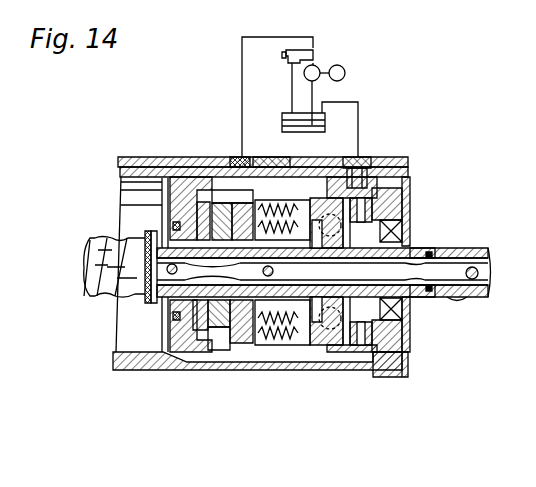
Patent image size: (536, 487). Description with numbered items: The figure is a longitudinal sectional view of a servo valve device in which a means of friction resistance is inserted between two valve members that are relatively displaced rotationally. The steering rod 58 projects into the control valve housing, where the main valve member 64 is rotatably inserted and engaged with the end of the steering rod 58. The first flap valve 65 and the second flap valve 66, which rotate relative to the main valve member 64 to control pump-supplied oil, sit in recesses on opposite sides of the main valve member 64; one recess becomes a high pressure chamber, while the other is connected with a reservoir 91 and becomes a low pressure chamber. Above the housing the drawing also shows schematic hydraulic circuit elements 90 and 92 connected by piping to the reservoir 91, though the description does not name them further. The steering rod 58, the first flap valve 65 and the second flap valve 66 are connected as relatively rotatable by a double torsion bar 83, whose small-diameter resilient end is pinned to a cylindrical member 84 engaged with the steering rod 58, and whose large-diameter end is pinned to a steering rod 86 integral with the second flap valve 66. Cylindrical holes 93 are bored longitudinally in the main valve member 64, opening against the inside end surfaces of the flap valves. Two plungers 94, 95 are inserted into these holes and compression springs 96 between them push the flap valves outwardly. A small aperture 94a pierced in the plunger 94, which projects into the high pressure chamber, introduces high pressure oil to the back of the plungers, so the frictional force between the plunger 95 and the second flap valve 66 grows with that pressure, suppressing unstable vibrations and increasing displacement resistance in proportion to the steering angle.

The steering rod 58 is at (102, 297).
The main valve member 64 is at (330, 167).
The first flap valve 65 is at (230, 342).
The second flap valve 66 is at (340, 367).
The double torsion bar 83 is at (410, 284).
The cylindrical member 84 is at (150, 305).
The steering rod 86 is at (415, 250).
The pressure gauges 90 is at (318, 67).
The reservoir 91 is at (325, 117).
The valve 92 is at (299, 48).
The cylindrical holes 93 is at (252, 157).
The plunger 94 is at (248, 157).
The small aperture 94a is at (215, 160).
The plunger 95 is at (318, 167).
The compression springs 96 is at (285, 160).